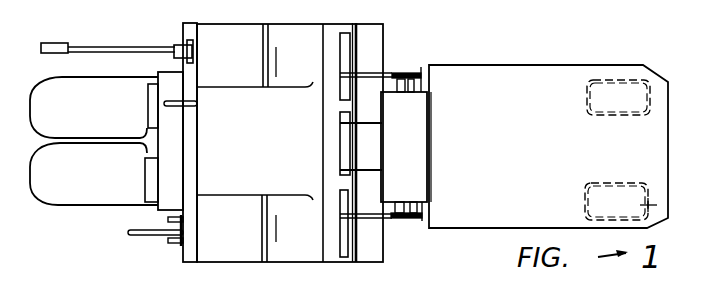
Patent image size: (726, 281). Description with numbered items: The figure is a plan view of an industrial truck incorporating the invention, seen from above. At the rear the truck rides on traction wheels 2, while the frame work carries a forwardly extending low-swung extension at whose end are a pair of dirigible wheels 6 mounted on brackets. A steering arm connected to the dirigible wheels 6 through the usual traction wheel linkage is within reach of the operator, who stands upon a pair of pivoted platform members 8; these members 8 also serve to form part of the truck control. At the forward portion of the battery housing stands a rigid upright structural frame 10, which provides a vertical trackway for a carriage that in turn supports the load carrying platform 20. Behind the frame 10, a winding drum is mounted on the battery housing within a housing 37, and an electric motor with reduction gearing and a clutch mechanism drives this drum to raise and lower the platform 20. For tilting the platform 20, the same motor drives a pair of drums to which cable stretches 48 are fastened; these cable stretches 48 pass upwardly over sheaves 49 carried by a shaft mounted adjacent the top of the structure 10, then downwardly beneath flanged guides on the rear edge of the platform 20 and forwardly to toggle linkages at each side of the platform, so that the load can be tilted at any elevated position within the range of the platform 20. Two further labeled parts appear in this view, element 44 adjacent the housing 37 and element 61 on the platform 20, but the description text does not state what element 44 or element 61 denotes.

The traction wheels 2 is at (230, 228).
The dirigible wheels 6 is at (676, 205).
The pivoted platform members 8 is at (94, 141).
The upright structural frame 10 is at (404, 147).
The platform 20 is at (548, 146).
The housing 37 is at (287, 142).
The nut 44 is at (413, 73).
The cable stretches 48 is at (422, 73).
The sheaves 49 is at (405, 220).
The slot 61 is at (615, 84).